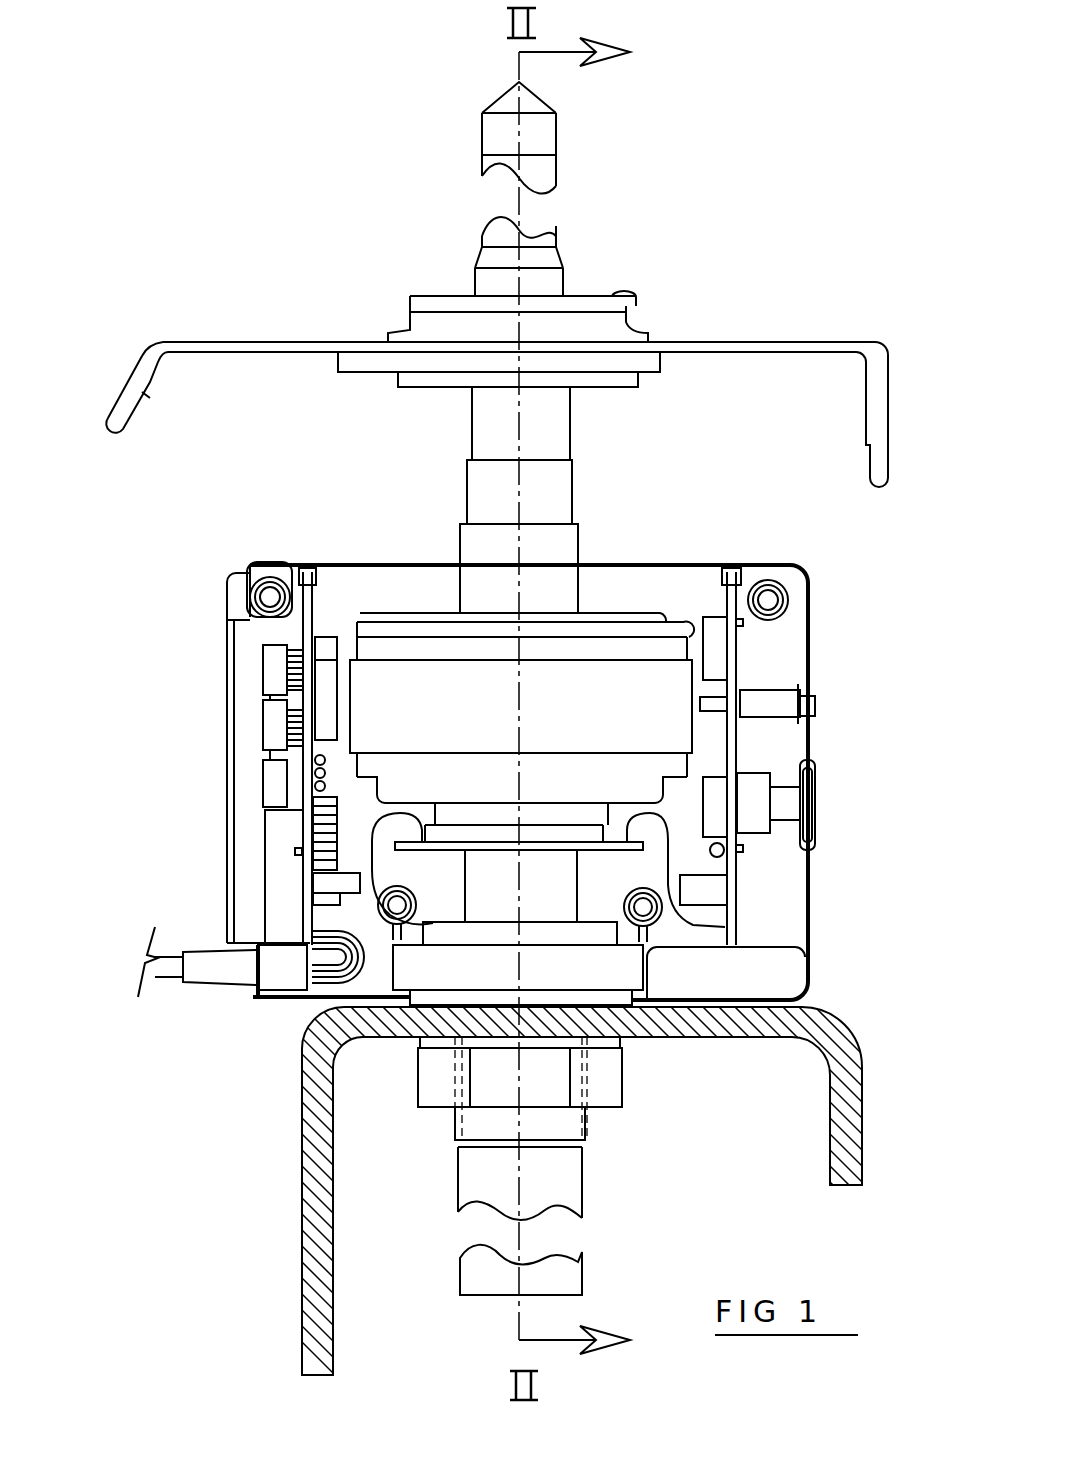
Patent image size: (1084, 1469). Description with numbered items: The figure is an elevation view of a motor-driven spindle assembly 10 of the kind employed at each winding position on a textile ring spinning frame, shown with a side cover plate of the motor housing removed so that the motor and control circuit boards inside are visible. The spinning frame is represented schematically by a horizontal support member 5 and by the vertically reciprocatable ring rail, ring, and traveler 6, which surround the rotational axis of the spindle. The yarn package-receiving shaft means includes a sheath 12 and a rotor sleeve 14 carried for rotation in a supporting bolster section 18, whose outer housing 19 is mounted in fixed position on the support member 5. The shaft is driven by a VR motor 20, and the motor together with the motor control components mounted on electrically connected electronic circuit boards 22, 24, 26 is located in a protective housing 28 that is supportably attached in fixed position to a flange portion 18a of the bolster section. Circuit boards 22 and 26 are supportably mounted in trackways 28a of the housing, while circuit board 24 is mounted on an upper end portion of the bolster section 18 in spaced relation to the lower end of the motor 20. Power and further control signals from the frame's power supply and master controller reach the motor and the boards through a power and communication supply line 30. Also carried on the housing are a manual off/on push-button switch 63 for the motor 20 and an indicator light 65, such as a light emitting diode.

The support member 5 is at (843, 1027).
The ring rail, ring, and traveler 6 is at (655, 342).
The motor-driven spindle assembly 10 is at (630, 489).
The sheath 12 is at (556, 152).
The rotor sleeve 14 is at (478, 443).
The bolster section 18 is at (584, 1181).
The flange portion 18a is at (435, 968).
The outer housing 19 is at (452, 1122).
The VR motor 20 is at (512, 715).
The electronic circuit board 22 is at (313, 826).
The electronic circuit board 24 is at (422, 846).
The electronic circuit board 26 is at (730, 895).
The protective housing 28 is at (808, 632).
The trackways 28a is at (305, 572).
The power and communication supply line 30 is at (218, 970).
The manual off/on switch 63 is at (812, 802).
The indicator light 65 is at (820, 705).